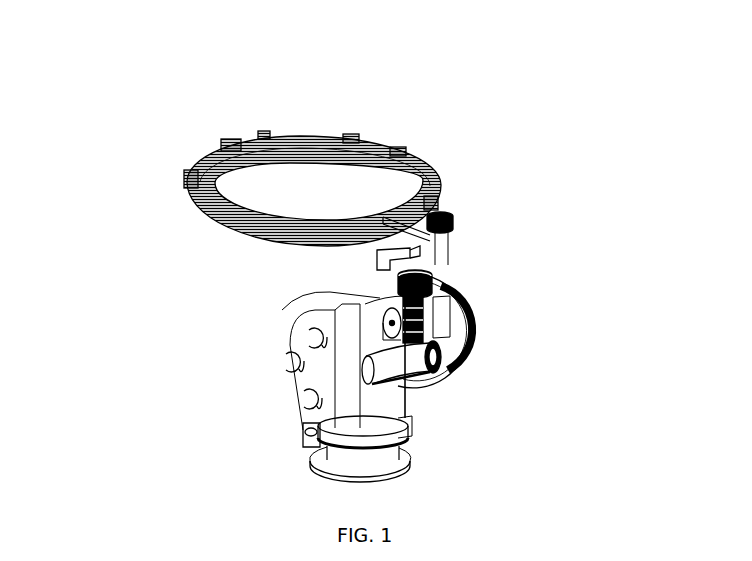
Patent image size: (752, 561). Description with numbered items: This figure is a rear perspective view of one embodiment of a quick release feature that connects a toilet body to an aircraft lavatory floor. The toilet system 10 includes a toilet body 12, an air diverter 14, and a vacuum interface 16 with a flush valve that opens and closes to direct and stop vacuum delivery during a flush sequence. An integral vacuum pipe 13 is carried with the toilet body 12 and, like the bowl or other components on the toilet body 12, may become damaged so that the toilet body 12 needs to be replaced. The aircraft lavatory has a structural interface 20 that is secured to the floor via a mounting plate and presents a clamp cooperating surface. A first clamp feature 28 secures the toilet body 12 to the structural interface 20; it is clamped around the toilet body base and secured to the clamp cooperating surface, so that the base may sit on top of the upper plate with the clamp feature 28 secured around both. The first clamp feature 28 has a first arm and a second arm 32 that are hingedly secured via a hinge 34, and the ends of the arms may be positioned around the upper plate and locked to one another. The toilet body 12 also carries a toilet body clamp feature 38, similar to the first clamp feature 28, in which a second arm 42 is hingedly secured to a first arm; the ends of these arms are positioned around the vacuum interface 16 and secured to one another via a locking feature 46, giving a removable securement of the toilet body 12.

The toilet system 10 is at (463, 74).
The toilet body 12 is at (275, 275).
The integral vacuum pipe 13 is at (407, 370).
The air diverter 14 is at (433, 162).
The vacuum interface 16 is at (485, 396).
The structural interface 20 is at (350, 458).
The first clamp feature 28 is at (292, 395).
The second arm 32 is at (305, 411).
The hinge 34 is at (305, 441).
The toilet body clamp feature 38 is at (474, 318).
The second arm 42 is at (458, 288).
The locking feature 46 is at (442, 272).